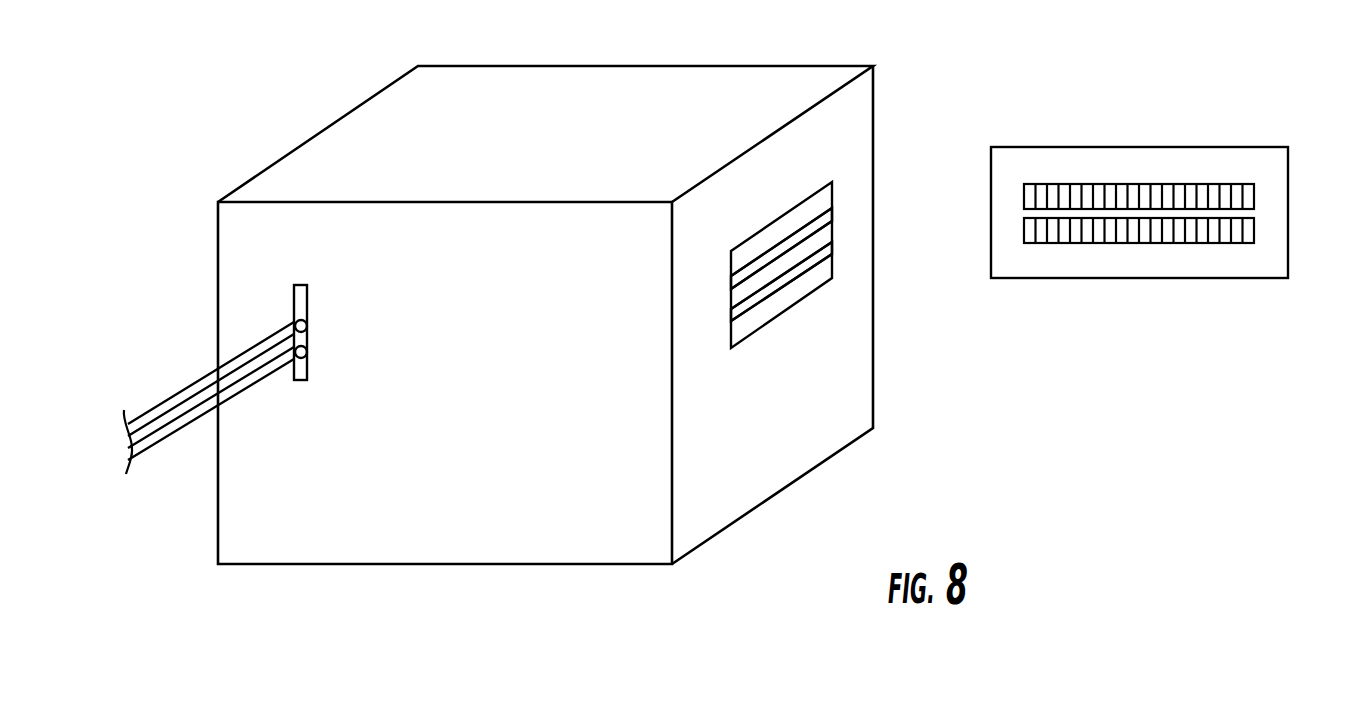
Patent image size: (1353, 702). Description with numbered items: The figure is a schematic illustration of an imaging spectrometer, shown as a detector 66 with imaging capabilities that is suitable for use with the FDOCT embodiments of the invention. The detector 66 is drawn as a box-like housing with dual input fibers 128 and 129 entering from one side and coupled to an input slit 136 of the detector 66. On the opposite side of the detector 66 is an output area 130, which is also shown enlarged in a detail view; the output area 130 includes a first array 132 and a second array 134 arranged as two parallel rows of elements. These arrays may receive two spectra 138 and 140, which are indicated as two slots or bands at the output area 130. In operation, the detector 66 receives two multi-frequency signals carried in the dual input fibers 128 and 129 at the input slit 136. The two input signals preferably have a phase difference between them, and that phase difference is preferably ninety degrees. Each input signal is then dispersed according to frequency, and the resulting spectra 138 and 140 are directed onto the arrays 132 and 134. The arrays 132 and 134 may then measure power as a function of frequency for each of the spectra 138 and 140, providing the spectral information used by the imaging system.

The detector 66 is at (288, 152).
The input fiber 128 is at (193, 382).
The input fiber 129 is at (173, 433).
The output area 130 is at (832, 184).
The first array 132 is at (1233, 187).
The second array 134 is at (1253, 223).
The input slit 136 is at (307, 300).
The spectrum 138 is at (732, 277).
The spectrum 140 is at (732, 315).